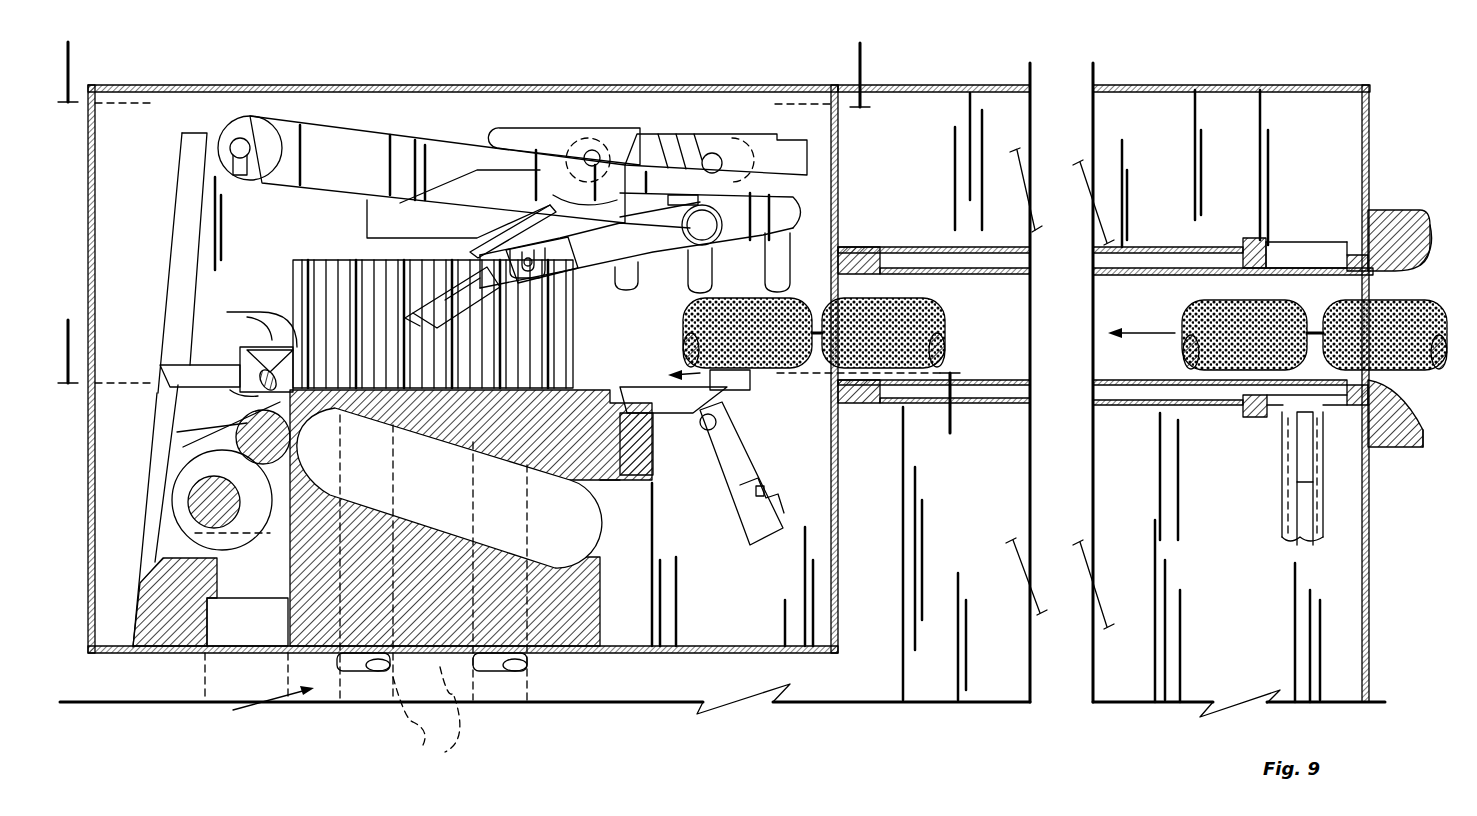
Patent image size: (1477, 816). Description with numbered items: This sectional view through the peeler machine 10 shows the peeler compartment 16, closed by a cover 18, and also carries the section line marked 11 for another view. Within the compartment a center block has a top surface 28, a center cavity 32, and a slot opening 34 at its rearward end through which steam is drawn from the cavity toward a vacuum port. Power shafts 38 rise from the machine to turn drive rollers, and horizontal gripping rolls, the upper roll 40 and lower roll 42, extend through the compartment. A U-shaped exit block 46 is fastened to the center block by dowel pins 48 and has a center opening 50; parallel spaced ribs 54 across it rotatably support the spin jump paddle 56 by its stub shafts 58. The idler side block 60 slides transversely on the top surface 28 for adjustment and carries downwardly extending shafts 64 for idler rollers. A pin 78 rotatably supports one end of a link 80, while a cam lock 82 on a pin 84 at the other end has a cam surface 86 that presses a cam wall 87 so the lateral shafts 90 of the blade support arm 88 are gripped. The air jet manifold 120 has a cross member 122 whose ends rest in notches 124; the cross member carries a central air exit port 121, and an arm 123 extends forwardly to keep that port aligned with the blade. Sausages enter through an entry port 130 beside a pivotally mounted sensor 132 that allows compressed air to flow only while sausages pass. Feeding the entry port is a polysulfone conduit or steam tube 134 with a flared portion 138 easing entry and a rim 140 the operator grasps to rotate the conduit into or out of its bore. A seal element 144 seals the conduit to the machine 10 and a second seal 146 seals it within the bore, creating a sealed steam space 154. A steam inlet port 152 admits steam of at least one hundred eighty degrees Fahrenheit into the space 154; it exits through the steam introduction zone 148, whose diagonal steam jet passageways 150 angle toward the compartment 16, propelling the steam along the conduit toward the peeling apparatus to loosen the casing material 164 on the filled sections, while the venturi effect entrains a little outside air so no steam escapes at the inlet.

The peeler machine 10 is at (473, 74).
The section line 11- 11 is at (517, 378).
The peeler compartment 16 is at (452, 107).
The cover 18 is at (458, 120).
The top surface 28 is at (603, 653).
The center cavity 32 is at (567, 653).
The slot opening 34 is at (247, 433).
The power shafts 38 is at (435, 742).
The upper gripping roll 40 is at (240, 400).
The lower gripping roll 42 is at (250, 460).
The exit block 46 is at (185, 653).
The dowel pins 48 is at (317, 653).
The center opening 50 is at (247, 289).
The ribs 54 is at (273, 365).
The spin jump paddle 56 is at (270, 383).
The stub shafts 58 is at (257, 393).
The idler side block 60 is at (781, 132).
The shafts 64 is at (460, 262).
The pin 78 is at (714, 150).
The link 80 is at (673, 133).
The cam lock 82 is at (545, 122).
The pin 84 is at (592, 150).
The cam surface 86 is at (635, 195).
The cam wall 87 is at (588, 148).
The blade support arm 88 is at (735, 182).
The shafts 90 is at (790, 190).
The air jet manifold 120 is at (347, 128).
The air exit port 121 is at (222, 192).
The cross member 122 is at (222, 178).
The arm 123 is at (622, 170).
The notches 124 is at (220, 160).
The entry port 130 is at (820, 291).
The sensor 132 is at (723, 455).
The conduit 134 is at (1150, 272).
The flared portion 138 is at (1428, 257).
The rim 140 is at (1390, 253).
The seal element 144 is at (1363, 230).
The second seal 146 is at (1250, 275).
The steam introduction zone 148 is at (1262, 288).
The steam jet passageways 150 is at (1268, 245).
The steam inlet port 152 is at (1297, 477).
The steam space 154 is at (1290, 250).
The casing material 164 is at (912, 307).